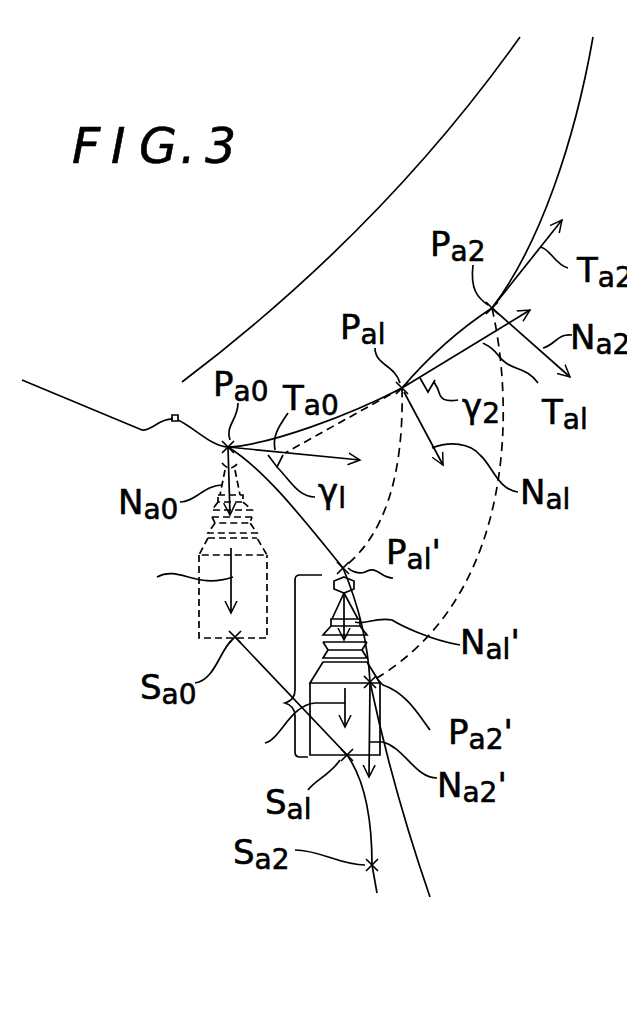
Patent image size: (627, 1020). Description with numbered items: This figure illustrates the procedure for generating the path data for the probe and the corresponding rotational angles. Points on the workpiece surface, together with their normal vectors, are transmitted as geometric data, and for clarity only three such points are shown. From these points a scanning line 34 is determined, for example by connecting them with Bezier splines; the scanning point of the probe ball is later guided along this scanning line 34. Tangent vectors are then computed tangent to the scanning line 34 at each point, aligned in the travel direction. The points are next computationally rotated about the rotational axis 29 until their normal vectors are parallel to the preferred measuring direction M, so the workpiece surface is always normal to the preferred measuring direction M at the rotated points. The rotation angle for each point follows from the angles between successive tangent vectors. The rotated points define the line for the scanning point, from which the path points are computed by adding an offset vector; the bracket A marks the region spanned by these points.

The rotational axis 29 is at (178, 418).
The scanning line 34 is at (370, 218).
The probe travel region A is at (289, 666).
The preferred measuring direction M is at (152, 565).